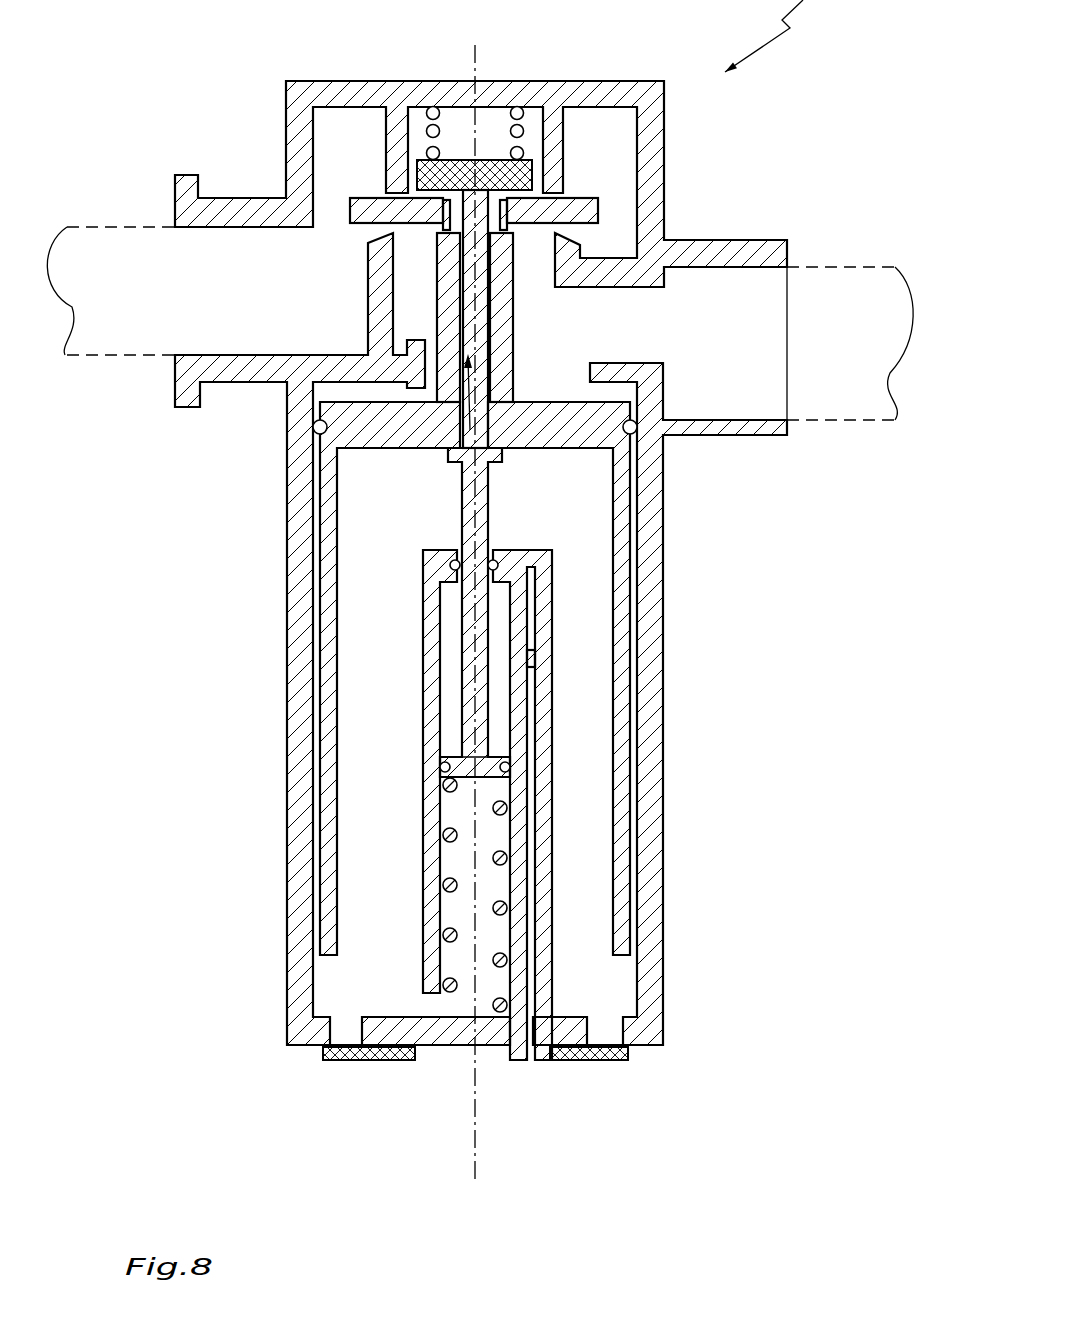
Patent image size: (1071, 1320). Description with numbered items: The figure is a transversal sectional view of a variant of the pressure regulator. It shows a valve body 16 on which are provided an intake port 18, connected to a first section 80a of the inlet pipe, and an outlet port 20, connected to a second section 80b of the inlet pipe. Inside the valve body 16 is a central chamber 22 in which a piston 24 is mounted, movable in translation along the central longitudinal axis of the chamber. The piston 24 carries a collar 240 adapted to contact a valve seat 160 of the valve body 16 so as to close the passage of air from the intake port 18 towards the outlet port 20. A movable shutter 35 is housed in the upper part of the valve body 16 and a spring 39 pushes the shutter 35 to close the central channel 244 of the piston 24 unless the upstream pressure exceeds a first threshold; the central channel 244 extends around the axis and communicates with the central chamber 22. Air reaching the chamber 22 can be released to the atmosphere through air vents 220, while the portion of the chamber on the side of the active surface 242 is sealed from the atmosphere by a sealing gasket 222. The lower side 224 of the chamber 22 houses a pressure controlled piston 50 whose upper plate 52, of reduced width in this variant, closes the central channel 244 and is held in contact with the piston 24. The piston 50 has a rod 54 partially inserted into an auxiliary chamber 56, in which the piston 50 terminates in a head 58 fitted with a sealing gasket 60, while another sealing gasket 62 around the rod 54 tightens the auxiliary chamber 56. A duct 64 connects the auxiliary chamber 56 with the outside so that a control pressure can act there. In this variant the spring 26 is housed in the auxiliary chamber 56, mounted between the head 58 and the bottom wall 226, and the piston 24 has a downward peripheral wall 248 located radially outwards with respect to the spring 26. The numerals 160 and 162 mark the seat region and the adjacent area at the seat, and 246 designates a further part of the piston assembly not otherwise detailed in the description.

The valve body 16 is at (298, 150).
The intake port 18 is at (192, 258).
The outlet port 20 is at (768, 370).
The central chamber 22 is at (623, 393).
The piston 24 is at (476, 595).
The spring 26 is at (505, 912).
The movable shutter 35 is at (518, 173).
The spring 39 is at (522, 128).
The pressure controlled piston 50 is at (460, 485).
The upper plate 52 is at (502, 457).
The rod 54 is at (487, 503).
The auxiliary chamber 56 is at (492, 640).
The head 58 is at (510, 757).
The sealing gasket 60 is at (510, 767).
The sealing gasket 62 is at (513, 550).
The duct 64 is at (517, 1027).
The first section of the inlet pipe 80a is at (102, 227).
The second section of the inlet pipe 80b is at (818, 267).
The valve seat 160 is at (370, 233).
The flow gap 162 is at (583, 363).
The air vents 220 is at (343, 1033).
The sealing gasket 222 is at (313, 427).
The lower side of the pressure chamber 224 is at (587, 978).
The bottom wall 226 is at (320, 1032).
The collar 240 is at (587, 210).
The active surface 242 is at (597, 400).
The central channel 244 is at (460, 428).
The guide sleeve 246 is at (447, 280).
The peripheral wall 248 is at (330, 770).